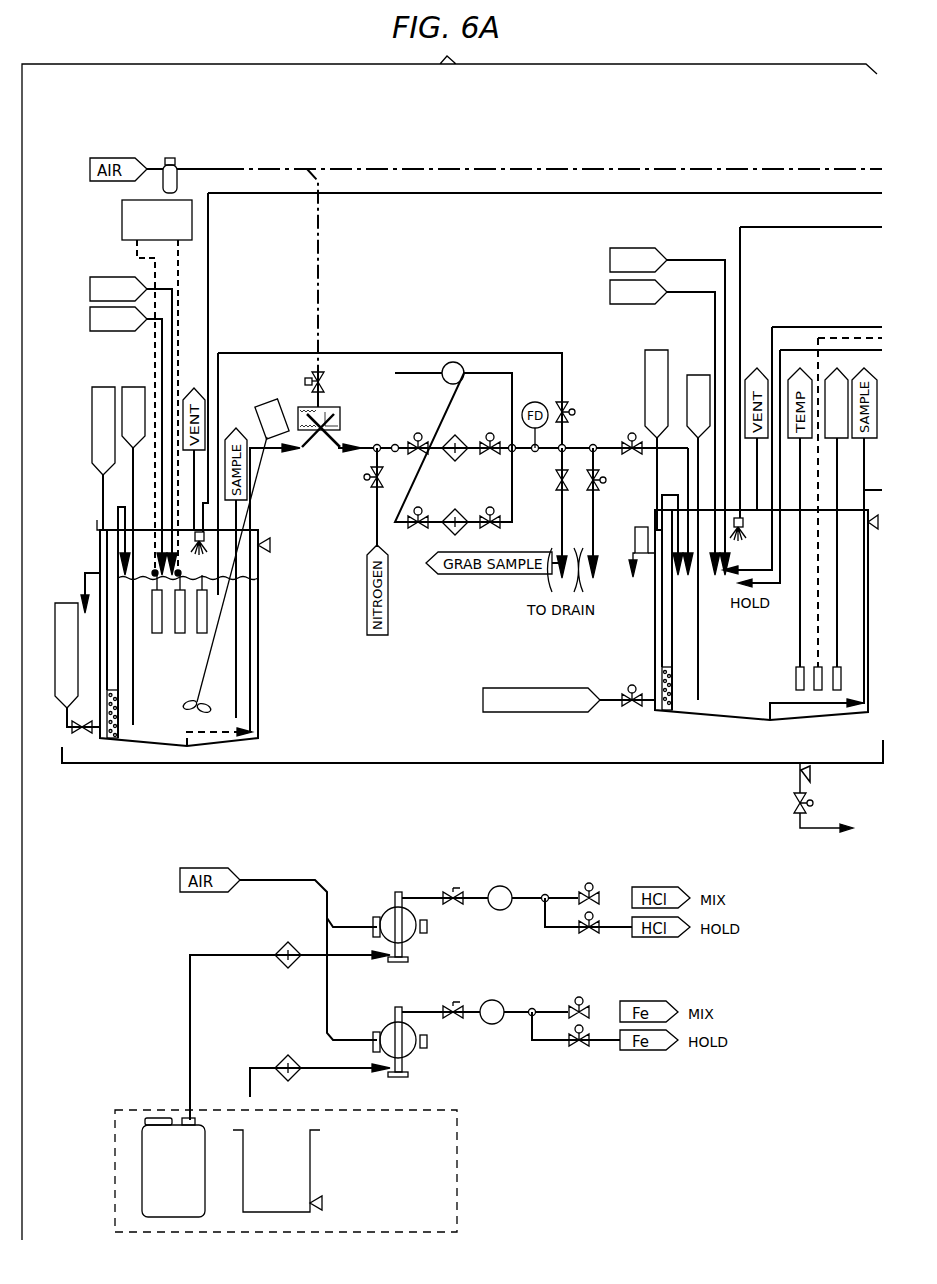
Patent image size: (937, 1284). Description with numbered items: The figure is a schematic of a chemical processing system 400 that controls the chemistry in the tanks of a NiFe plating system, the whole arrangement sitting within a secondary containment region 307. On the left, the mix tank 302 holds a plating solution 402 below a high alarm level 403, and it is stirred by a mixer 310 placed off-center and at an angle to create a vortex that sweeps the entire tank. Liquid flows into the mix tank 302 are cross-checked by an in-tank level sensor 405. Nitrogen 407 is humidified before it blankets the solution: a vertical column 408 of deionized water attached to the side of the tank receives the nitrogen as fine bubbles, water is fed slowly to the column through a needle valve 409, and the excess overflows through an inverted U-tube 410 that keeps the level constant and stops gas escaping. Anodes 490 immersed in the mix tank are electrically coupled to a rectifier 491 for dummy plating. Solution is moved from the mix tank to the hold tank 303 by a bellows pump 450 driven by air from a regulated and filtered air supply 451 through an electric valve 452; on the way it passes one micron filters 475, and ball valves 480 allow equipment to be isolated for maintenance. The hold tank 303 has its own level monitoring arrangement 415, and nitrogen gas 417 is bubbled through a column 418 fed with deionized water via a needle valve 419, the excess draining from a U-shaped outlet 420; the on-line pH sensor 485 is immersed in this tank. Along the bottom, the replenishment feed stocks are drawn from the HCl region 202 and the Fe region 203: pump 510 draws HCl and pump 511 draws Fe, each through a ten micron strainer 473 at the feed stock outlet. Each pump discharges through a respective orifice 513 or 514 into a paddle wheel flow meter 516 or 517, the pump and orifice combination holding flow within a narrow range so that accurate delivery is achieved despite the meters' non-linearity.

The HCl region 202 is at (90, 318).
The Fe region 203 is at (118, 276).
The mix tank 302 is at (258, 583).
The hold tank 303 is at (742, 698).
The secondary containment region 307 is at (610, 765).
The mixer 310 is at (260, 420).
The chemical processing system 400 is at (752, 817).
The plating solution 402 is at (165, 739).
The high alarm level 403 is at (262, 530).
The level sensor 405 is at (132, 387).
The nitrogen 407 is at (92, 395).
The vertical column 408 is at (98, 528).
The needle valve 409 is at (84, 733).
The inverted U-tube 410 is at (83, 583).
The level monitoring arrangement 415 is at (695, 375).
The nitrogen gas 417 is at (645, 398).
The column 418 is at (665, 648).
The needle valve 419 is at (630, 708).
The U-shaped outlet 420 is at (640, 527).
The bellows pump 450 is at (332, 407).
The air supply 451 is at (197, 166).
The electric valve 452 is at (312, 376).
The strainers 473 is at (276, 962).
The filters 475 is at (456, 508).
The ball valves 480 is at (418, 435).
The pH sensor 485 is at (836, 368).
The anodes 490 is at (150, 625).
The rectifier 491 is at (192, 214).
The pump 510 is at (385, 910).
The pump 511 is at (385, 1025).
The orifice 513 is at (450, 892).
The orifice 514 is at (452, 1006).
The flow meter 516 is at (500, 886).
The flow meter 517 is at (494, 1000).